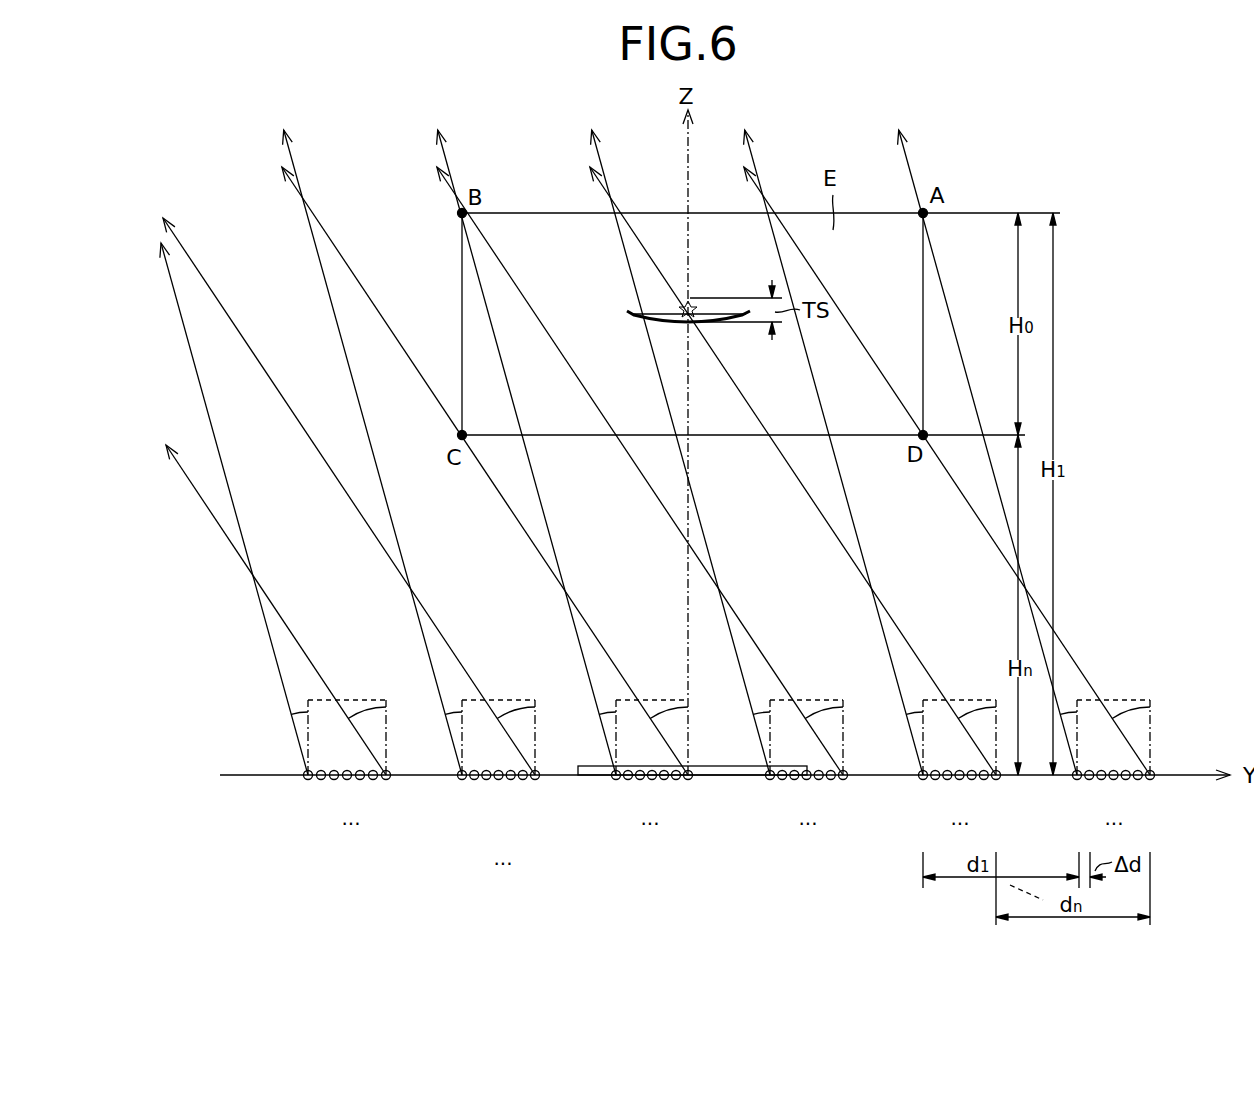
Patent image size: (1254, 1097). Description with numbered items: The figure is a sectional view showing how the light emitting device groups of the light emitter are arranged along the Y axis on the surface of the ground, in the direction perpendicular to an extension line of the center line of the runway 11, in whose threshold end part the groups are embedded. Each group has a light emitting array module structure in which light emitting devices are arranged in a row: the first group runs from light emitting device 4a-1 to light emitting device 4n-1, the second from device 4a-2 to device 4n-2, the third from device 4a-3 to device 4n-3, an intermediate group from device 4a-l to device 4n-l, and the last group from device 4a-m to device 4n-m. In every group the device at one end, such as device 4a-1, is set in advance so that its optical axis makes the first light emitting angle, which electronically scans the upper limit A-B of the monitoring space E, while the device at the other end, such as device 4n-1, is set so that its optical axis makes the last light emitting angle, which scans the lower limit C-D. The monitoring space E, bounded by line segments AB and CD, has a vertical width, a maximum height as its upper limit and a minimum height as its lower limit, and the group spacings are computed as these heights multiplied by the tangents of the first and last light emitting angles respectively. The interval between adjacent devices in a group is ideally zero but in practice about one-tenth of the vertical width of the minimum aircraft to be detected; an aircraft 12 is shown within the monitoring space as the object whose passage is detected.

The runway 11 is at (718, 766).
The object to be detected 12 is at (672, 326).
The light emitting device 4a-1 is at (1077, 780).
The light emitting device 4n-1 is at (1150, 780).
The light emitting device 4a-2 is at (923, 780).
The light emitting device 4n-2 is at (996, 780).
The light emitting device 4a-3 is at (770, 780).
The light emitting device 4n-3 is at (843, 780).
The light emitting device 4a-l is at (616, 780).
The light emitting device 4n-l is at (688, 780).
The light emitting device 4a-m is at (308, 780).
The light emitting device 4n-m is at (386, 780).